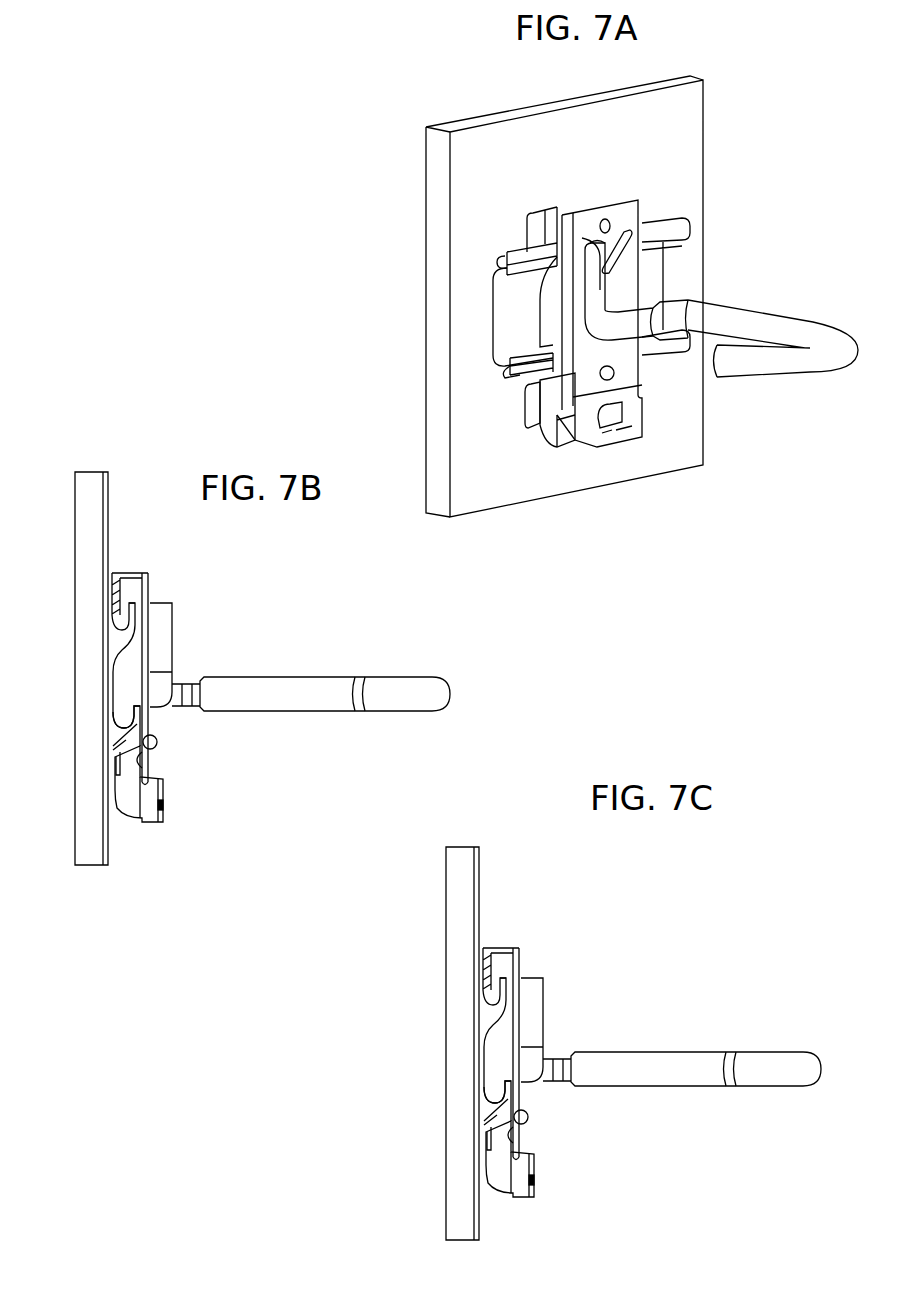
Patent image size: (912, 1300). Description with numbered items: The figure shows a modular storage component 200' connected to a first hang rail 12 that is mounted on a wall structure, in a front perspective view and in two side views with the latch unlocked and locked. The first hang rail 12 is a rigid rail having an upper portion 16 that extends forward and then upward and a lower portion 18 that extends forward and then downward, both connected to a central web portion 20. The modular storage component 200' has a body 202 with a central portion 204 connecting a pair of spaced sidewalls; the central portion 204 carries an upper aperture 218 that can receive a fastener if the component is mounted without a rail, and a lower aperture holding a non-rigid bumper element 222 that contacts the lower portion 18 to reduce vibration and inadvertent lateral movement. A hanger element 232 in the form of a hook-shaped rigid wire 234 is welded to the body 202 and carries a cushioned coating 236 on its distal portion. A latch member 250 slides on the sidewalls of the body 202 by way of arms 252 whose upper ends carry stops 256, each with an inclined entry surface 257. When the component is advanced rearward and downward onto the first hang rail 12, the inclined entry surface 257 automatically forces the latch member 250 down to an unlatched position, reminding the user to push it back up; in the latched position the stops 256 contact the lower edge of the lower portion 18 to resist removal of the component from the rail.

In FIG. 7A, the first hang rail 12 is at (488, 292).
In FIG. 7B, the first hang rail 12 is at (110, 643).
In FIG. 7C, the first hang rail 12 is at (438, 1043).
In FIG. 7A, the upper portion 16 is at (507, 262).
In FIG. 7B, the upper portion 16 is at (134, 614).
In FIG. 7C, the upper portion 16 is at (521, 1030).
In FIG. 7A, the lower portion 18 is at (512, 370).
In FIG. 7B, the lower portion 18 is at (140, 727).
In FIG. 7C, the lower portion 18 is at (531, 1099).
In FIG. 7A, the central web portion 20 is at (493, 318).
In FIG. 7A, the modular storage component 200' is at (717, 168).
In FIG. 7B, the modular storage component 200' is at (260, 813).
In FIG. 7C, the modular storage component 200' is at (542, 1220).
In FIG. 7A, the body 202 is at (573, 212).
In FIG. 7B, the body 202 is at (151, 570).
In FIG. 7C, the body 202 is at (524, 997).
In FIG. 7A, the central portion 204 is at (606, 205).
In FIG. 7B, the central portion 204 is at (150, 588).
In FIG. 7C, the central portion 204 is at (562, 1042).
In FIG. 7A, the upper aperture 218 is at (602, 218).
In FIG. 7A, the bumper element 222 is at (617, 375).
In FIG. 7B, the bumper element 222 is at (157, 745).
In FIG. 7A, the hanger element 232 is at (768, 300).
In FIG. 7A, the hook-shaped rigid wire 234 is at (600, 290).
In FIG. 7A, the cushioned coating 236 is at (780, 372).
In FIG. 7B, the latch member 250 is at (166, 823).
In FIG. 7C, the latch member 250 is at (570, 1194).
In FIG. 7A, the arms 252 is at (550, 425).
In FIG. 7B, the arms 252 is at (131, 806).
In FIG. 7C, the arms 252 is at (510, 1159).
In FIG. 7A, the stops 256 is at (537, 413).
In FIG. 7B, the stops 256 is at (148, 771).
In FIG. 7C, the stops 256 is at (551, 1130).
In FIG. 7B, the inclined entry surface 257 is at (113, 741).
In FIG. 7C, the inclined entry surface 257 is at (442, 1113).